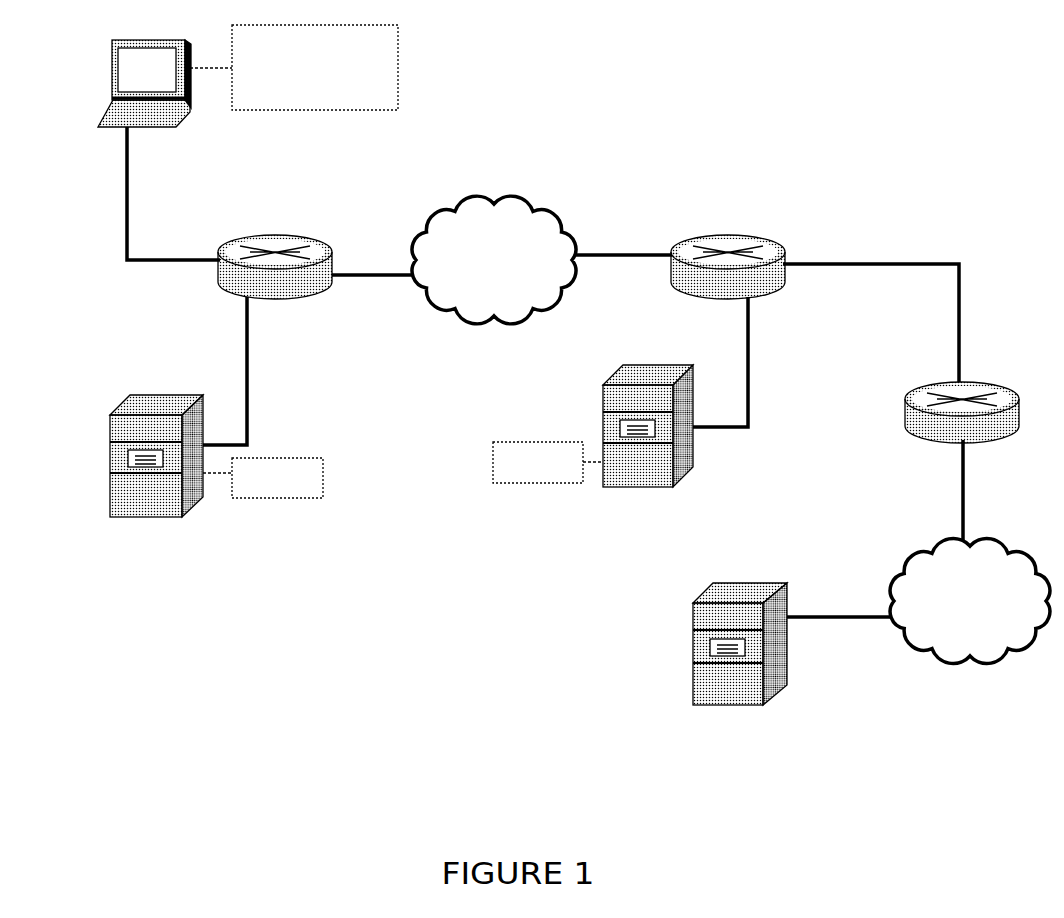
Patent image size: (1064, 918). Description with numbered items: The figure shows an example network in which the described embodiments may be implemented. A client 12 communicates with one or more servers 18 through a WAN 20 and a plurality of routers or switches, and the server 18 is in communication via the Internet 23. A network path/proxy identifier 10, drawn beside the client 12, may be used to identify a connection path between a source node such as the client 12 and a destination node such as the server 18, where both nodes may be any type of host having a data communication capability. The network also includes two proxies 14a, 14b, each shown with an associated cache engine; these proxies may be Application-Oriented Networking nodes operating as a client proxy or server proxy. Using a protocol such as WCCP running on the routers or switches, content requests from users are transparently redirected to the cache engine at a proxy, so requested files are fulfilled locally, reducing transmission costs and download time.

The network path/proxy identifier 10 is at (320, 22).
The client 12 is at (107, 64).
The proxy 14a is at (108, 467).
The proxy 14b is at (624, 383).
The server 18 is at (746, 582).
The WAN 20 is at (517, 204).
The Internet 23 is at (945, 564).